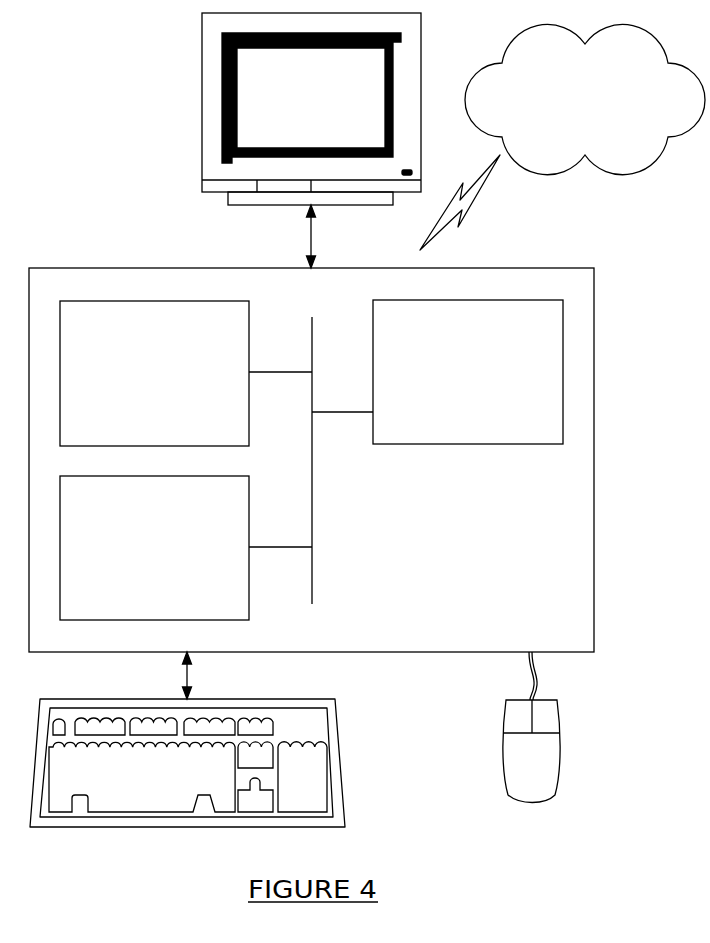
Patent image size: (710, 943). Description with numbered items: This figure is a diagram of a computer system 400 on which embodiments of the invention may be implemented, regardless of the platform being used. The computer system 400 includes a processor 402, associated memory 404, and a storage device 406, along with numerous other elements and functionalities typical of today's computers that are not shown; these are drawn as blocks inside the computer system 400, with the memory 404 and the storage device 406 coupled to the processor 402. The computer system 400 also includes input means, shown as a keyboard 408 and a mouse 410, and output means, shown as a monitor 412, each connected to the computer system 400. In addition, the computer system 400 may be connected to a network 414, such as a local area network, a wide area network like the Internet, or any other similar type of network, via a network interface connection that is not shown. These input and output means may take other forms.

The computer system 400 is at (608, 333).
The processor 402 is at (450, 383).
The memory 404 is at (135, 383).
The storage device 406 is at (135, 558).
The keyboard 408 is at (124, 786).
The mouse 410 is at (514, 773).
The monitor 412 is at (293, 111).
The network 414 is at (567, 111).